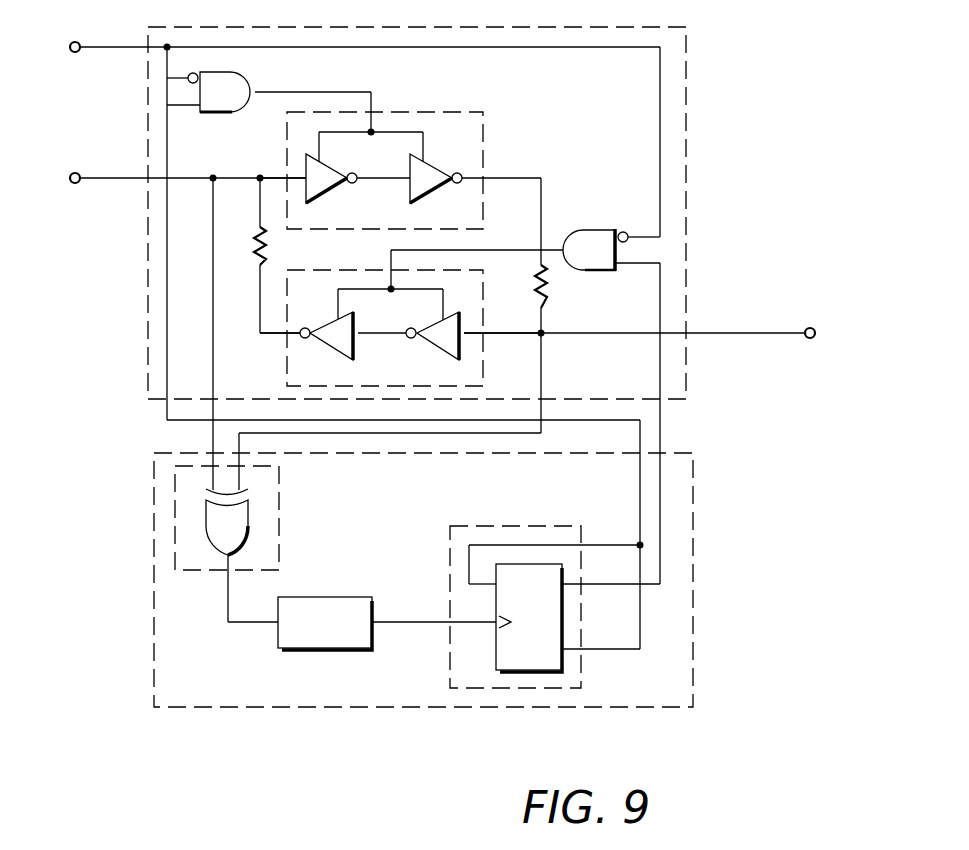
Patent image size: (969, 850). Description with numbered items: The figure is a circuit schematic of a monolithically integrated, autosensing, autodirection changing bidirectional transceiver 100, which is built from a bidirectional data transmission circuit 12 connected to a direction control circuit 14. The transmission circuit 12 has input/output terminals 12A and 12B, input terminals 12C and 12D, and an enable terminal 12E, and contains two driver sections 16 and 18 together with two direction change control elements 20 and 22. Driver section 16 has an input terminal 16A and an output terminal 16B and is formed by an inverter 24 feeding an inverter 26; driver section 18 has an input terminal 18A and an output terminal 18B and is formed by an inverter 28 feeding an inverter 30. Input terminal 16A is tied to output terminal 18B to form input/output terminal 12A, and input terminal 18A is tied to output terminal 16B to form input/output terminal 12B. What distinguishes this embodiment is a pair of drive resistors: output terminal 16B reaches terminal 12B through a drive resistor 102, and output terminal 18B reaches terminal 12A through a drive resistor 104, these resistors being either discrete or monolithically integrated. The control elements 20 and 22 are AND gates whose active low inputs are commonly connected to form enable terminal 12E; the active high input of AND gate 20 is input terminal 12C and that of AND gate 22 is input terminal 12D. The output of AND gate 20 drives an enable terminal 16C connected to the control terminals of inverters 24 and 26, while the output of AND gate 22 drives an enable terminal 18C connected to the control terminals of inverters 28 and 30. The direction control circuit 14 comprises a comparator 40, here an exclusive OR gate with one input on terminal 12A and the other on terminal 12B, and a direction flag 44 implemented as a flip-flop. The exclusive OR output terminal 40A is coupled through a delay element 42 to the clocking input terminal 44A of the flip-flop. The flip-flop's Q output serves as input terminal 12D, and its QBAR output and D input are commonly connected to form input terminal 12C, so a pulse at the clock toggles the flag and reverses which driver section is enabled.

The bidirectional transceiver 100 is at (690, 766).
The bidirectional data transmission circuit 12 is at (688, 130).
The input/output terminal 12A is at (71, 173).
The input/output terminal 12B is at (814, 329).
The input terminal 12C is at (640, 504).
The input terminal 12D is at (605, 585).
The enable terminal 12E is at (71, 43).
The direction control circuit 14 is at (695, 523).
The driver section 16 is at (445, 112).
The input terminal 16A is at (278, 176).
The output terminal 16B is at (492, 178).
The enable terminal 16C is at (372, 103).
The driver section 18 is at (318, 270).
The input terminal 18A is at (499, 333).
The output terminal 18B is at (280, 337).
The enable terminal 18C is at (388, 262).
The direction change control element 20 is at (228, 114).
The direction change control element 22 is at (603, 272).
The circuit element 24 is at (329, 198).
The circuit element 26 is at (434, 198).
The circuit element 28 is at (440, 352).
The circuit element 30 is at (338, 355).
The comparator 40 is at (283, 517).
The output terminal 40A is at (226, 599).
The delay element 42 is at (312, 652).
The direction flag 44 is at (509, 526).
The clocking input terminal 44A is at (440, 620).
The drive resistor 102 is at (549, 290).
The drive resistor 104 is at (256, 244).